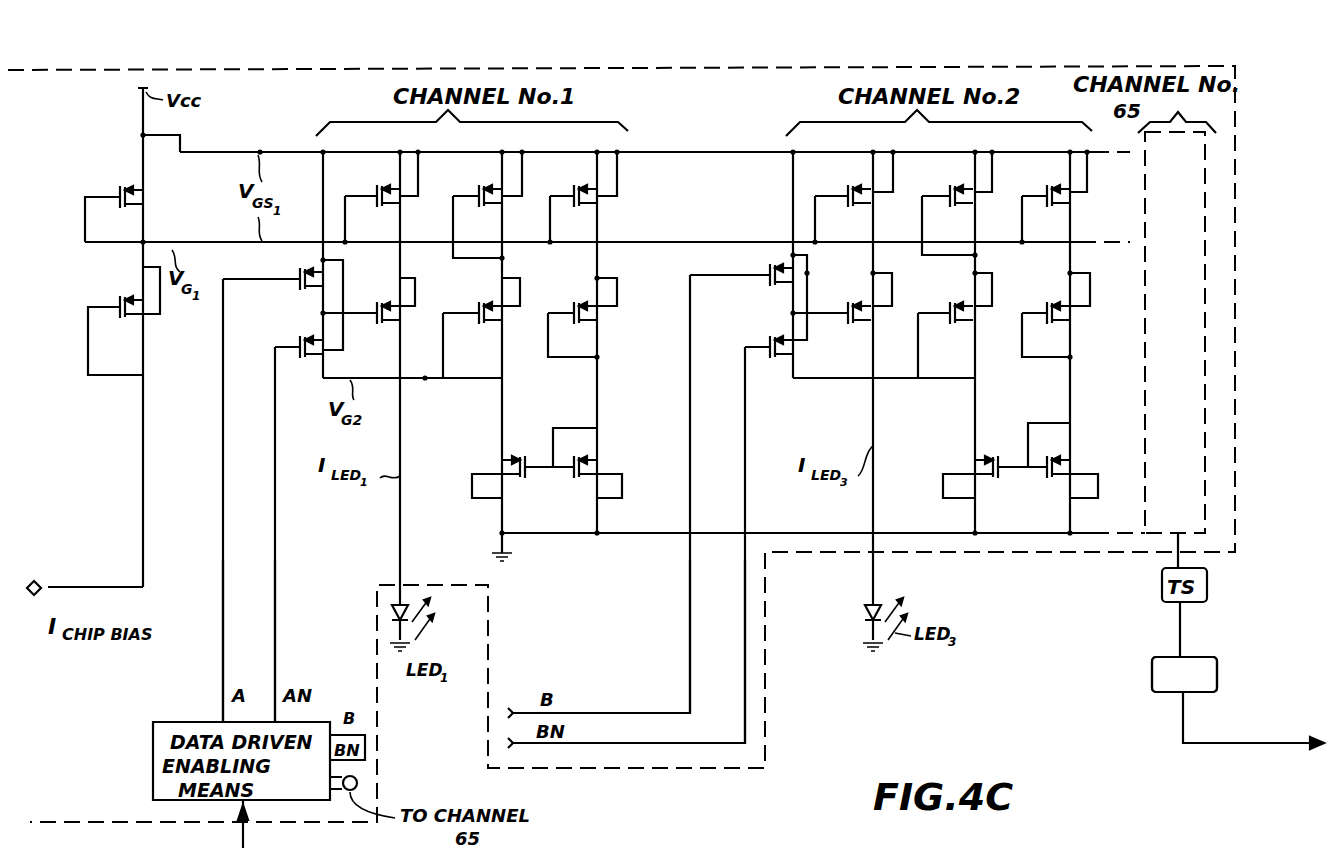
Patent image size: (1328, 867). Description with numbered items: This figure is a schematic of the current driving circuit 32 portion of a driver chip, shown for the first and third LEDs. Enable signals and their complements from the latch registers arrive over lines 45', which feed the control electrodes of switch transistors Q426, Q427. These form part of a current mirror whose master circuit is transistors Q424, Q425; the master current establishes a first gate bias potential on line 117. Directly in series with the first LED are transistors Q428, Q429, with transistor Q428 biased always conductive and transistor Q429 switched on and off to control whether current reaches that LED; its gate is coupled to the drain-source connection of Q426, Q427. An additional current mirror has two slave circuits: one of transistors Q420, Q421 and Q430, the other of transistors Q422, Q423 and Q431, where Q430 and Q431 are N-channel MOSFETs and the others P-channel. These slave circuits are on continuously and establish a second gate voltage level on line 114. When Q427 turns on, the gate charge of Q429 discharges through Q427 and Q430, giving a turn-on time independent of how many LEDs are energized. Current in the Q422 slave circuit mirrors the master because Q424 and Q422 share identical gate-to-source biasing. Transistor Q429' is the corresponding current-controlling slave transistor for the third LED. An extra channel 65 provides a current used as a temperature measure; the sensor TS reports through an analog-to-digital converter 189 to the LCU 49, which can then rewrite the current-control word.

The current driving circuit 32 is at (553, 67).
The transistor Q424 is at (118, 191).
The transistor Q425 is at (117, 304).
The transistor Q426 is at (298, 275).
The transistor Q427 is at (298, 343).
The transistor Q428 is at (378, 192).
The transistor Q429 is at (374, 287).
The transistor Q429' is at (838, 254).
The transistor Q420 is at (480, 192).
The transistor Q421 is at (480, 309).
The transistor Q422 is at (575, 192).
The transistor Q423 is at (575, 304).
The transistor Q430 is at (512, 460).
The transistor Q431 is at (580, 462).
The line 117 is at (210, 242).
The line 114 is at (425, 380).
The lines 45' is at (249, 641).
The channel 65 is at (1178, 112).
The analog-to-digital converter 189 is at (1152, 676).
The LCU 49 is at (1247, 755).